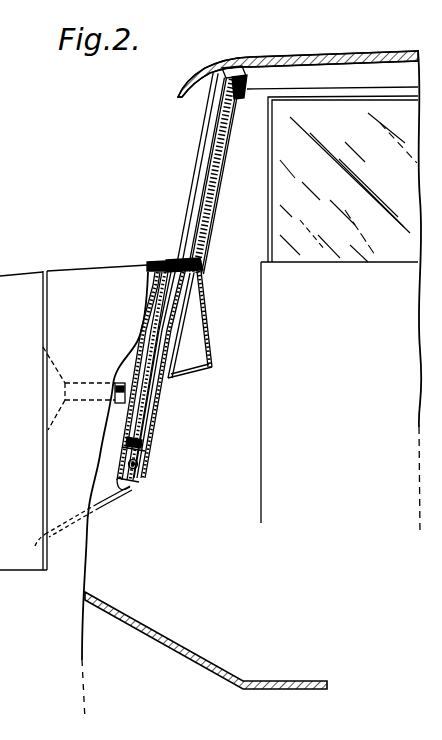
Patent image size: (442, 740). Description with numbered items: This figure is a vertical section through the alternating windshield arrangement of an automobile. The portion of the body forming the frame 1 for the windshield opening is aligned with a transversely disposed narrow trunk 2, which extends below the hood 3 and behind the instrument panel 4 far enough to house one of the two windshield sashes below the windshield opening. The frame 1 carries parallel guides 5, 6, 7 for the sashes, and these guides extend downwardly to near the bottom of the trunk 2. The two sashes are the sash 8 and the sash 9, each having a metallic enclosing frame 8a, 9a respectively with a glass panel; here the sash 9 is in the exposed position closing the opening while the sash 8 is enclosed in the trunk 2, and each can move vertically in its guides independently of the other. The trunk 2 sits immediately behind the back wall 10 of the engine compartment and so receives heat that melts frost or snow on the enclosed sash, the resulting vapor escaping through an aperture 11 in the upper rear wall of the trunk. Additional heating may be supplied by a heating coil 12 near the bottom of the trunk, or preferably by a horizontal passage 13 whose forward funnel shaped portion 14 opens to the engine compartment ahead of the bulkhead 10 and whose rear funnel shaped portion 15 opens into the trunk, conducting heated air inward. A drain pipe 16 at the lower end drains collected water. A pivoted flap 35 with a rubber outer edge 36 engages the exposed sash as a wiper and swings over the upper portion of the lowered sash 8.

The windshield opening frame 1 is at (210, 174).
The trunk 2 is at (157, 433).
The hood 3 is at (78, 271).
The instrument panel 4 is at (203, 310).
The guide 5 is at (212, 101).
The guide 6 is at (219, 117).
The guide 7 is at (240, 100).
The windshield sash 8 is at (148, 407).
The metallic enclosing frame 8a is at (125, 443).
The windshield sash 9 is at (212, 188).
The metallic enclosing frame 9a is at (247, 75).
The back wall of engine compartment 10 is at (45, 468).
The aperture 11 is at (165, 292).
The heating coil 12 is at (118, 477).
The horizontal passage 13 is at (84, 402).
The funnel shaped portion 14 is at (58, 412).
The funnel shaped portion 15 is at (143, 352).
The drain pipe 16 is at (105, 507).
The pivoted flap 35 is at (160, 259).
The rubber outer edge 36 is at (190, 258).